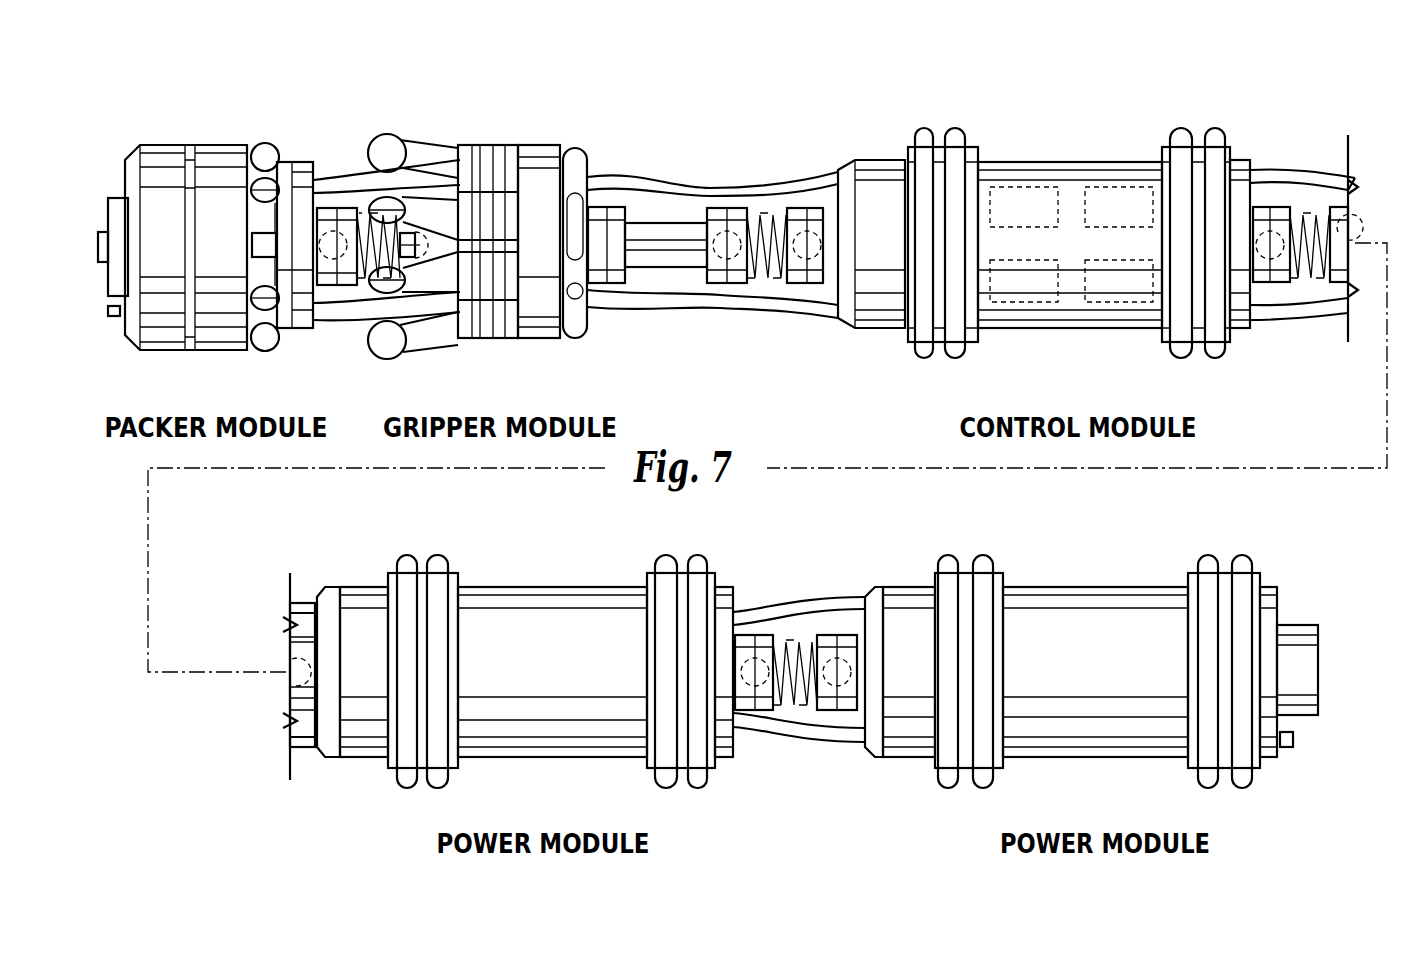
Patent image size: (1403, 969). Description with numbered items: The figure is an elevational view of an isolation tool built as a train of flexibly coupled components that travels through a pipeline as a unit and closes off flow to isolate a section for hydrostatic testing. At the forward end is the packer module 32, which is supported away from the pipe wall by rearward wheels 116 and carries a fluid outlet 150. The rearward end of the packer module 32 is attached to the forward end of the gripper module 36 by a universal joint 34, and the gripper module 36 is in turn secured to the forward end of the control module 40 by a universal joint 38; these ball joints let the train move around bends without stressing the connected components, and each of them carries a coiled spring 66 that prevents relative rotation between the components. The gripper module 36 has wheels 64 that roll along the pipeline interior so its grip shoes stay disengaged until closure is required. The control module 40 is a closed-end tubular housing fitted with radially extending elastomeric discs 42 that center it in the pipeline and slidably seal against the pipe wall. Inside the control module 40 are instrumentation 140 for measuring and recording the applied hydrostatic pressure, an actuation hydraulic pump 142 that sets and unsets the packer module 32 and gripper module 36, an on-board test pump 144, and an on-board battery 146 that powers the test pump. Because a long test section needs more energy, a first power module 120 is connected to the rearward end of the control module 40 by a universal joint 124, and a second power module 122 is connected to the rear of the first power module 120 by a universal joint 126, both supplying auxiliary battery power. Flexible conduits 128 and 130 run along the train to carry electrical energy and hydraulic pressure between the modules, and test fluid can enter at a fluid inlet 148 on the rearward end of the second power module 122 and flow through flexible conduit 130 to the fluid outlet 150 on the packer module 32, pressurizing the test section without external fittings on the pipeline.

The packer module 32 is at (160, 150).
The universal joint 34 is at (362, 215).
The gripper module 36 is at (530, 152).
The universal joint 38 is at (780, 215).
The control module 40 is at (992, 165).
The elastomeric discs 42 is at (950, 130).
The wheels 64 is at (385, 150).
The coiled spring 66 is at (395, 255).
The rearward wheels 116 is at (266, 342).
The first power module 120 is at (535, 733).
The second power module 122 is at (1090, 735).
The universal joint 124 is at (1305, 215).
The universal joint 126 is at (795, 640).
The flexible conduit 128 is at (340, 180).
The flexible conduit 130 is at (345, 308).
The instrumentation 140 is at (1015, 185).
The actuation hydraulic pump 142 is at (1100, 185).
The on-board test pump 144 is at (1118, 302).
The on-board battery 146 is at (1020, 302).
The fluid inlet 148 is at (1285, 748).
The fluid outlet 150 is at (110, 318).